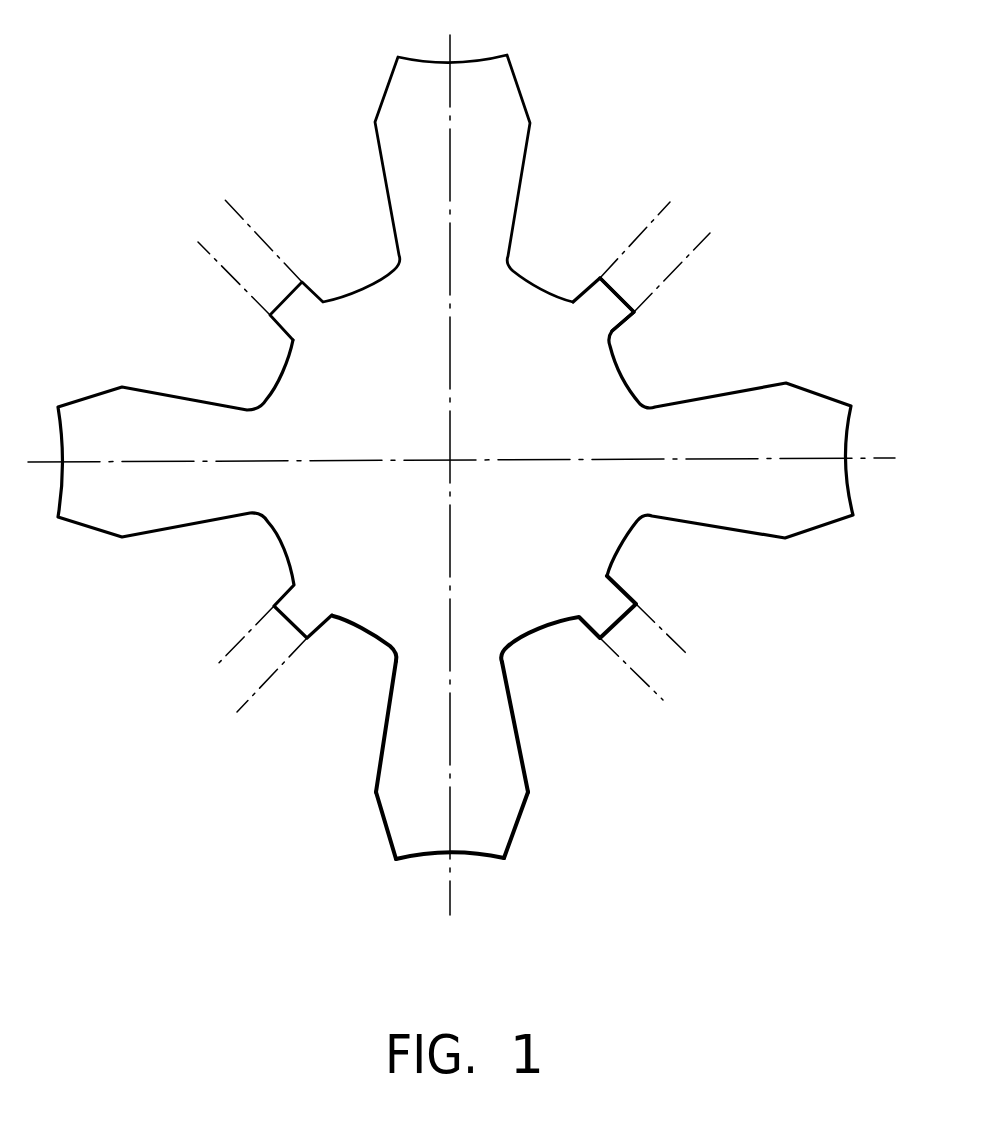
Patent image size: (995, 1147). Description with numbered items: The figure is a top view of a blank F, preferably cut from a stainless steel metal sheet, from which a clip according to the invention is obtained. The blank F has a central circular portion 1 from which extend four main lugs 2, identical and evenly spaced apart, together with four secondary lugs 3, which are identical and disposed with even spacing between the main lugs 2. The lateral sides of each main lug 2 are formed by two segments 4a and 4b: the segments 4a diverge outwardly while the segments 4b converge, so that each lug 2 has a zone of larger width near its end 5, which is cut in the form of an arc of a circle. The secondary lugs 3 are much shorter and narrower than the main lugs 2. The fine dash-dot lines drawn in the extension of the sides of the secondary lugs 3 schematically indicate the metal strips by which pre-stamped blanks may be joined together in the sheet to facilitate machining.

The circular portion 1 is at (282, 408).
The main lug 2 is at (788, 510).
The secondary lug 3 is at (605, 328).
The divergent segment 4a is at (534, 726).
The convergent segment 4b is at (535, 835).
The end 5 is at (443, 858).
The blank F is at (243, 740).